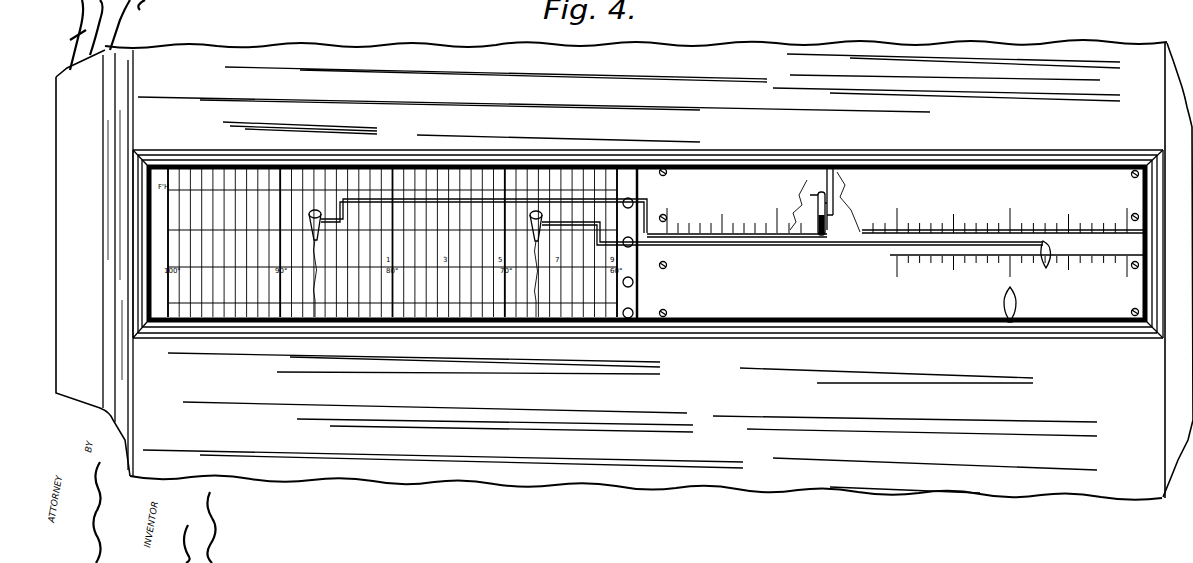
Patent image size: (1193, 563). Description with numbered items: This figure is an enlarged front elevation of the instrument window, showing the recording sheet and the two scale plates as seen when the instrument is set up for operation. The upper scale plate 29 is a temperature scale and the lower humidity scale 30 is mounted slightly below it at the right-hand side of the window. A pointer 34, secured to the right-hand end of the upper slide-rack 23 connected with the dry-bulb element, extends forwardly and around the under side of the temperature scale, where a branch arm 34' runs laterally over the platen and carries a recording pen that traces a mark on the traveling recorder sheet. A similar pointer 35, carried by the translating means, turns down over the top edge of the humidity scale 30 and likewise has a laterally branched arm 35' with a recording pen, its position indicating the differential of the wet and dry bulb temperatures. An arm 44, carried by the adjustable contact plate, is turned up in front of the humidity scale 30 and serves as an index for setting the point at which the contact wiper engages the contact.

The upper slide-rack 23 is at (838, 168).
The upper scale plate 29 is at (899, 204).
The lower humidity scale 30 is at (1016, 280).
The pointer 34 is at (895, 224).
The branch arm 34' is at (511, 205).
The pointer 35 is at (968, 263).
The laterally branched arm 35' is at (792, 258).
The arm 44 is at (1006, 302).